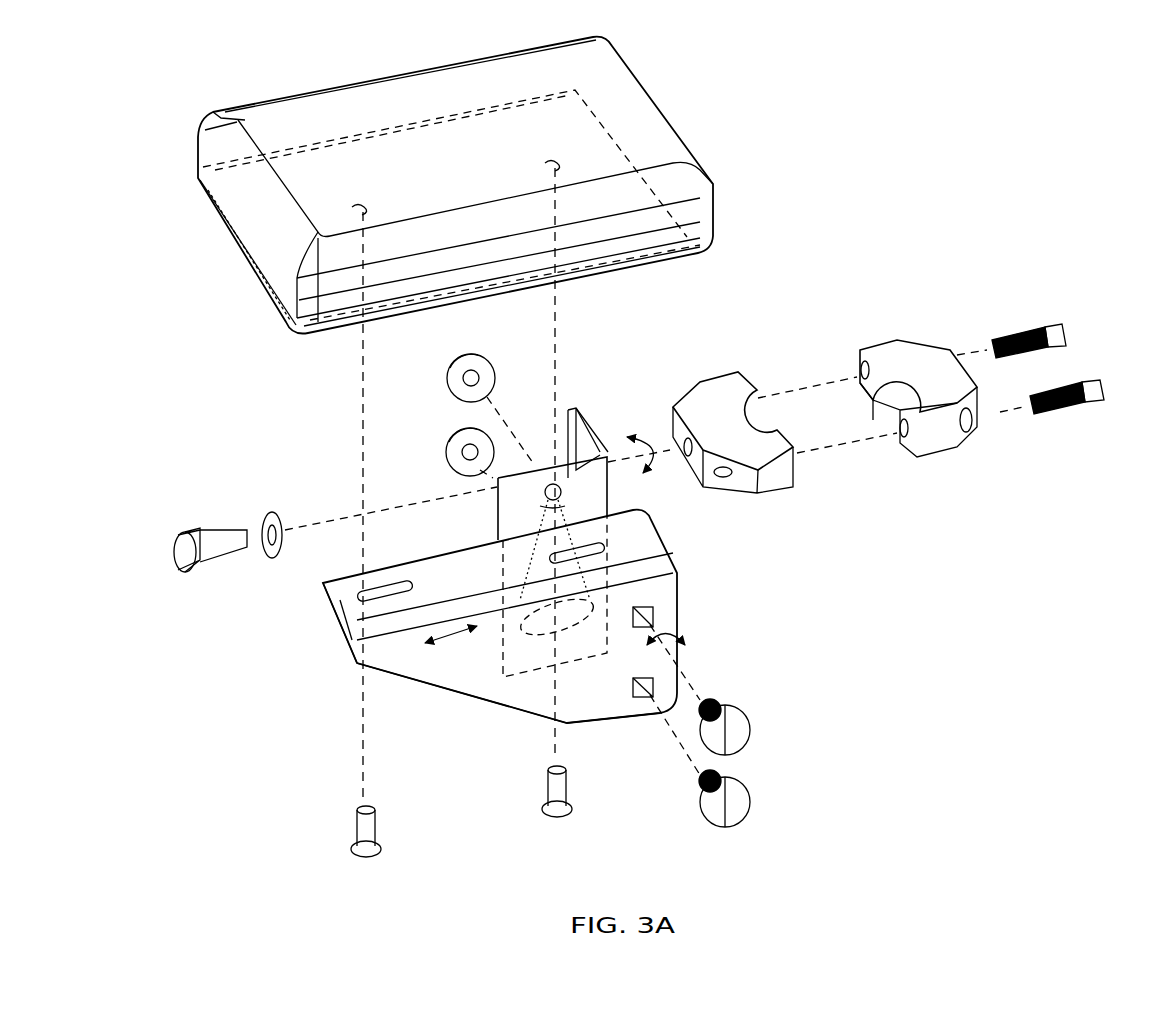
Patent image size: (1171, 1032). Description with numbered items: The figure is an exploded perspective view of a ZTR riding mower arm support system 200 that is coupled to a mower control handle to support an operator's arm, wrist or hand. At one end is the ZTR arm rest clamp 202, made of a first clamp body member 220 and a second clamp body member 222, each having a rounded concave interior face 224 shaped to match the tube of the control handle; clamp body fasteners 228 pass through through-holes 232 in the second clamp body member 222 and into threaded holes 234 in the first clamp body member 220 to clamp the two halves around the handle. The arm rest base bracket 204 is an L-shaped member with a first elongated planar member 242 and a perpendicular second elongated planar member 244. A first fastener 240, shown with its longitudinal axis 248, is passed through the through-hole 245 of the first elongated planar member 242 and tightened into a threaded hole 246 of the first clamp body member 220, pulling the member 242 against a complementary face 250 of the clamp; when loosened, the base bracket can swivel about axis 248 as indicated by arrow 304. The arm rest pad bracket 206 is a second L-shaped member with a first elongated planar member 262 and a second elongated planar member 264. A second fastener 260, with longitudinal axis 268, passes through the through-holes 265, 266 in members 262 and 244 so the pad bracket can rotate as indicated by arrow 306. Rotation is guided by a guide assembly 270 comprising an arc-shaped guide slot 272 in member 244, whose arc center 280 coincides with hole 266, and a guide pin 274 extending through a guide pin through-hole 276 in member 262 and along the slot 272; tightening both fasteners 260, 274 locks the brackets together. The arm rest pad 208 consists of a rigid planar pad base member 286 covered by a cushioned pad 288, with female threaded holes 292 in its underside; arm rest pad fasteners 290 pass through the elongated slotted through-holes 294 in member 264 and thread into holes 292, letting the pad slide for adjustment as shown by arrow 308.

The ZTR riding mower arm support system 200 is at (869, 150).
The ZTR arm rest clamp 202 is at (913, 305).
The arm rest base bracket 204 is at (588, 381).
The arm rest pad bracket 206 is at (357, 668).
The arm rest pad 208 is at (414, 46).
The first clamp body member 220 is at (781, 498).
The second clamp body member 222 is at (940, 463).
The interior face 224 is at (758, 408).
The clamp body fasteners 228 is at (1097, 373).
The through-holes 232 is at (858, 372).
The threaded holes 234 is at (726, 479).
The first fastener 240 is at (182, 528).
The first elongated planar member 242 is at (598, 396).
The second elongated planar member 244 is at (503, 513).
The through-hole 245 is at (586, 446).
The threaded hole 246 is at (686, 456).
The longitudinal axis 248 is at (341, 521).
The complementary face 250 is at (691, 463).
The second fastener 260 is at (756, 725).
The first elongated planar member 262 is at (513, 698).
The second elongated planar member 264 is at (351, 620).
The second fastener through-hole 265 is at (659, 613).
The second fastener through-hole 266 is at (546, 505).
The longitudinal axis 268 is at (479, 400).
The guide assembly 270 is at (749, 819).
The guide slot 272 is at (523, 628).
The guide pin 274 is at (753, 790).
The guide pin through-hole 276 is at (643, 701).
The arc center 280 is at (561, 491).
The rigid planar pad base member 286 is at (319, 144).
The cushioned pad 288 is at (341, 86).
The arm rest pad fasteners 290 is at (386, 849).
The female threaded holes 292 is at (546, 163).
The through-holes 294 is at (546, 553).
The arrow 304 is at (653, 435).
The arrow 306 is at (685, 641).
The arrow 308 is at (450, 592).